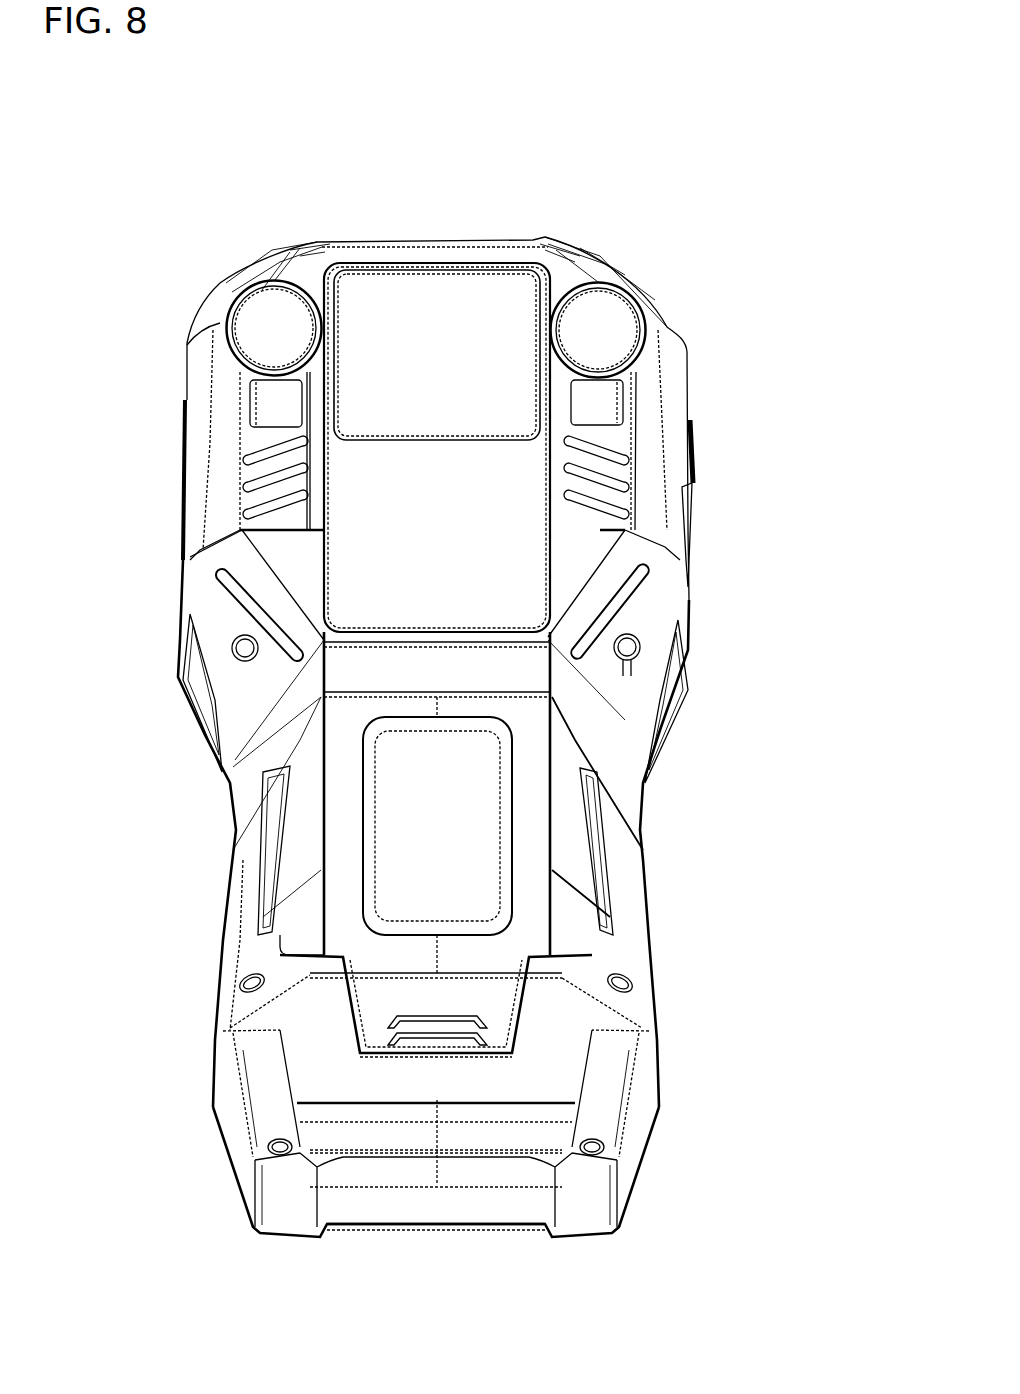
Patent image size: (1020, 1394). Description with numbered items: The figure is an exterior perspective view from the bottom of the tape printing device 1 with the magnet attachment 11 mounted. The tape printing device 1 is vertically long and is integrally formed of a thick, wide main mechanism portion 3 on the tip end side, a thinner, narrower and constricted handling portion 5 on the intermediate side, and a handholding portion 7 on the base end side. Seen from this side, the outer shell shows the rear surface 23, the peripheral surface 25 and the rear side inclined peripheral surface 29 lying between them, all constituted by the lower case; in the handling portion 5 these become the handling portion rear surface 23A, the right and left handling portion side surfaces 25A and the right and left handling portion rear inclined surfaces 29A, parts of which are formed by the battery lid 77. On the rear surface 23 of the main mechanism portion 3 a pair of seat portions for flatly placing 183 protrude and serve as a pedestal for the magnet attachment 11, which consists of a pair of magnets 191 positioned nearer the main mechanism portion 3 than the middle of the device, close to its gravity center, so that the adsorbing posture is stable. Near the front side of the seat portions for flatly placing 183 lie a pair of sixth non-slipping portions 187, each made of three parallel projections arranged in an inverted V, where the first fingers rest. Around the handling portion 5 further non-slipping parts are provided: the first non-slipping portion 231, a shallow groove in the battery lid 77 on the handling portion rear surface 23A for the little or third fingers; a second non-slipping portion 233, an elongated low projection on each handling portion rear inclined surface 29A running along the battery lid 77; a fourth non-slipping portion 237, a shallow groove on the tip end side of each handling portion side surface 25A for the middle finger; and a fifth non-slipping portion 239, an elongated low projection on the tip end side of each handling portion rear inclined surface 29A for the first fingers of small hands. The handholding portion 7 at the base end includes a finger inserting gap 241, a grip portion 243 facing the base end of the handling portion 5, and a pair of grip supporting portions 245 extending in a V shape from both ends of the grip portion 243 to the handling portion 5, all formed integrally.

The tape printing device 1 is at (437, 147).
The main mechanism portion 3 is at (757, 278).
The handling portion 5 is at (773, 870).
The handholding portion 7 is at (692, 1208).
The magnet attachment 11 is at (473, 368).
The magnet 191 is at (603, 290).
The seat portion for flatly placing 183 is at (275, 408).
The sixth non-slipping portion 187 is at (292, 472).
The fifth non-slipping portion 239 is at (258, 640).
The fourth non-slipping portion 237 is at (205, 682).
The first non-slipping portion 231 is at (412, 752).
The rear surface 23 is at (528, 792).
The handling portion rear surface 23A is at (512, 668).
The rear side inclined peripheral surface 29 is at (687, 807).
The handling portion rear inclined surface 29A is at (592, 740).
The peripheral surface 25 is at (200, 906).
The handling portion side surface 25A is at (233, 783).
The second non-slipping portion 233 is at (270, 858).
The grip supporting portion 245 is at (222, 1140).
The battery lid 77 is at (371, 1038).
The grip portion 243 is at (437, 1207).
The finger inserting gap 241 is at (517, 1137).